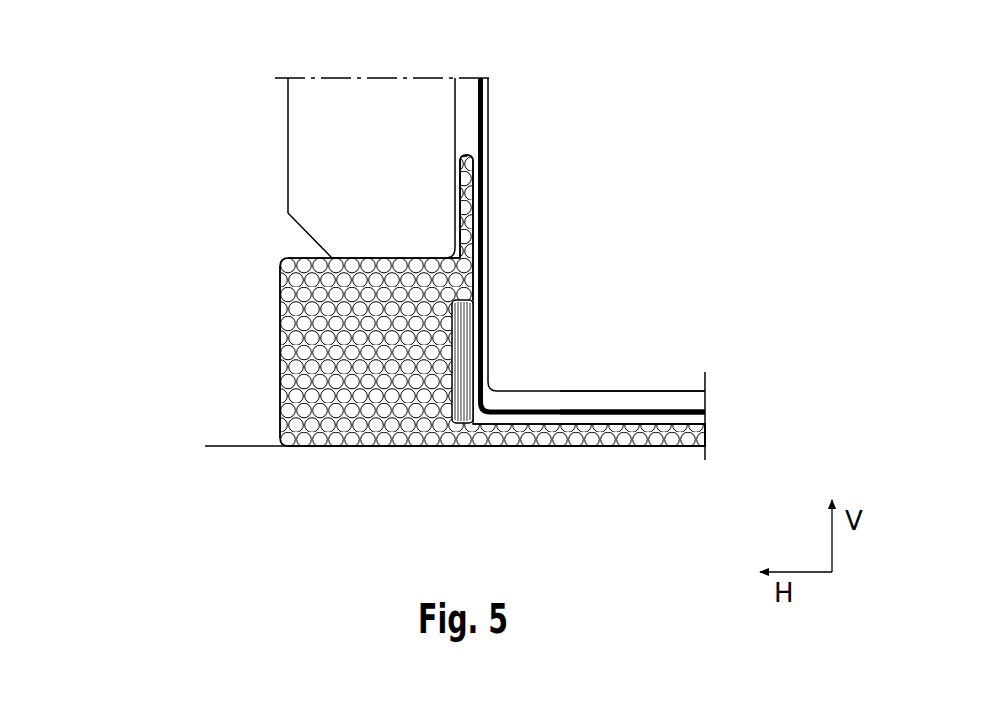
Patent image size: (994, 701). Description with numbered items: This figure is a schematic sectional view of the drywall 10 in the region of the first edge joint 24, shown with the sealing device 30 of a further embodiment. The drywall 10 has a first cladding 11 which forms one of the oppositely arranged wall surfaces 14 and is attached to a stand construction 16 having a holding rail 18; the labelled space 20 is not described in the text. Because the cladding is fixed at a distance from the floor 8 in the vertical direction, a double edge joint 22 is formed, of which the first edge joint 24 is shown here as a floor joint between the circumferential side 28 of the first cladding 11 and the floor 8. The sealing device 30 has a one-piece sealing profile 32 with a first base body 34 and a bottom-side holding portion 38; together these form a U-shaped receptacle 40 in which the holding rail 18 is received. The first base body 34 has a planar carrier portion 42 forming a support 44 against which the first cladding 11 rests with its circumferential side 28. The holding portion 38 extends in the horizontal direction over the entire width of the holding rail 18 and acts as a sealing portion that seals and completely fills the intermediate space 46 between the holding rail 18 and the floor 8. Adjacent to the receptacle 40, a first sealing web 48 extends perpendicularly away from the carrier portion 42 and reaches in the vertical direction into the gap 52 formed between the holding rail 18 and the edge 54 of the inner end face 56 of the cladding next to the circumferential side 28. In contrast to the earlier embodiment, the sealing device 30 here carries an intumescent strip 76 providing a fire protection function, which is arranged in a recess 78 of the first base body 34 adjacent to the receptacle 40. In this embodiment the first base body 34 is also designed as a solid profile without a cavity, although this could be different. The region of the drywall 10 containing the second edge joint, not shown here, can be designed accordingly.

The floor 8 is at (555, 509).
The drywall 10 is at (168, 91).
The first cladding 11 is at (280, 133).
The wall surface 14 is at (306, 134).
The stand construction 16 is at (714, 378).
The holding rail 18 is at (692, 408).
The cavity 20 is at (353, 115).
The double edge joint 22 is at (318, 454).
The first edge joint 24 is at (455, 497).
The circumferential side 28 is at (380, 262).
The sealing device 30 is at (268, 352).
The sealing profile 32 is at (293, 397).
The first base body 34 is at (367, 438).
The holding portion 38 is at (615, 437).
The receptacle 40 is at (627, 373).
The carrier portion 42 is at (315, 272).
The support 44 is at (360, 242).
The intermediate space 46 is at (714, 436).
The first sealing web 48 is at (468, 172).
The gap 52 is at (468, 130).
The edge 54 is at (462, 226).
The inner end face 56 is at (455, 107).
The intumescent strip 76 is at (452, 420).
The recess 78 is at (486, 359).